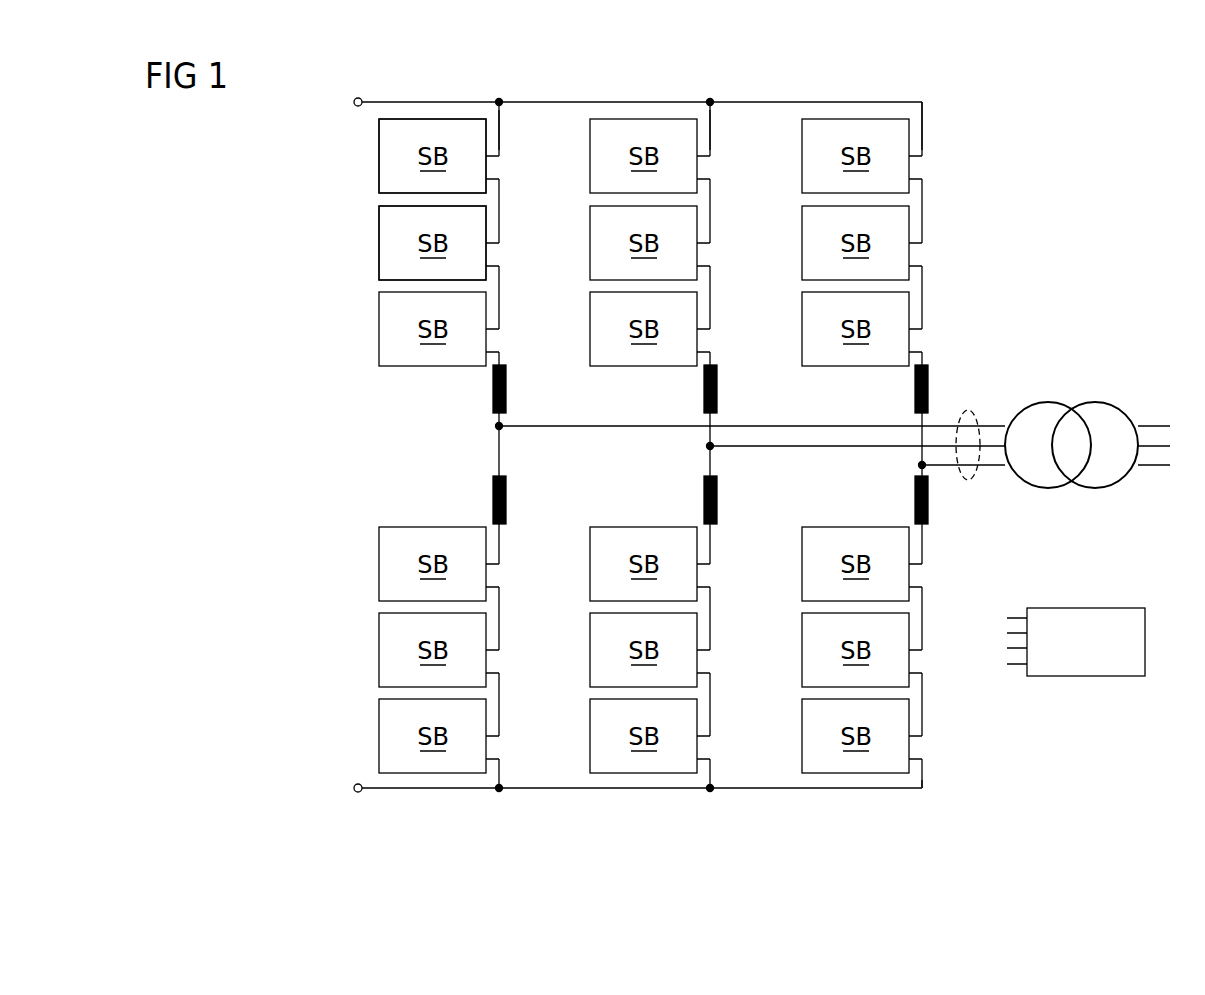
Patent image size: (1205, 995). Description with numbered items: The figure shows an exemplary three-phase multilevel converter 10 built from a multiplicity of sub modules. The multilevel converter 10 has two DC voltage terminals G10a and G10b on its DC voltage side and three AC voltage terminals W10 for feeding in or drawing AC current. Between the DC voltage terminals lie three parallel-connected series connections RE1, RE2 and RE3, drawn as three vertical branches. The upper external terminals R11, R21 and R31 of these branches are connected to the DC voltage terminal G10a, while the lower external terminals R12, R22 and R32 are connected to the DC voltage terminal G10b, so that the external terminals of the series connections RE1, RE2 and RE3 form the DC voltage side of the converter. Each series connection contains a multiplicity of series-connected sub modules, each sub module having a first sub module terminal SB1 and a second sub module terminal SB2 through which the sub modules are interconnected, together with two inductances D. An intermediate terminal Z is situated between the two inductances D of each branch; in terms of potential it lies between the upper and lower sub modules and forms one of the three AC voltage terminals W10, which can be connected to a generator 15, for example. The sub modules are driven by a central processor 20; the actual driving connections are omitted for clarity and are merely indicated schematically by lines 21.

The multilevel converter 10 is at (1022, 243).
The generator 15 is at (1097, 488).
The central processor 20 is at (1086, 676).
The lines 21 is at (1020, 664).
The DC voltage terminal G10a is at (354, 102).
The DC voltage terminal G10b is at (354, 788).
The external terminal R11 is at (499, 102).
The external terminal R21 is at (710, 102).
The external terminal R31 is at (922, 102).
The external terminal R12 is at (499, 788).
The external terminal R22 is at (710, 788).
The external terminal R32 is at (922, 788).
The series connection RE1 is at (499, 128).
The series connection RE2 is at (710, 128).
The series connection RE3 is at (922, 128).
The first sub module terminal SB1 is at (490, 156).
The second sub module terminal SB2 is at (493, 179).
The inductance D is at (506, 389).
The intermediate terminal Z is at (497, 426).
The AC voltage terminal W10 is at (970, 480).